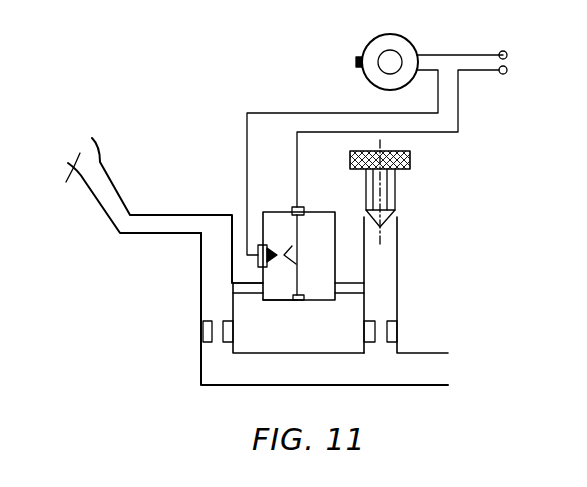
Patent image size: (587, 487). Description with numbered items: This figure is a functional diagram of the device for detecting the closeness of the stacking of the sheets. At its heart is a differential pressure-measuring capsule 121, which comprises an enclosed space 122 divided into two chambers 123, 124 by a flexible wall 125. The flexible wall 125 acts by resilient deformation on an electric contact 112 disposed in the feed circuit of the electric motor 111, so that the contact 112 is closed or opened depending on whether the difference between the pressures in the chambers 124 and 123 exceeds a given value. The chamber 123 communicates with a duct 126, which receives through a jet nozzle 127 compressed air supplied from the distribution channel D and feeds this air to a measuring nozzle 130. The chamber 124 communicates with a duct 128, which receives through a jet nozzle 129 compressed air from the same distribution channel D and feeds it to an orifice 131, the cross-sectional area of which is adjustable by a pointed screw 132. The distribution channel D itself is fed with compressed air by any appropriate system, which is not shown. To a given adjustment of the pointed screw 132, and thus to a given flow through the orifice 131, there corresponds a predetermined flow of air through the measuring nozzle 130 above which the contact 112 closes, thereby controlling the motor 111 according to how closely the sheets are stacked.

The electric motor 111 is at (377, 52).
The electric contact 112 is at (288, 251).
The differential pressure-measuring capsule 121 is at (251, 387).
The enclosed space 122 is at (303, 208).
The chamber 123 is at (276, 289).
The chamber 124 is at (319, 289).
The flexible wall 125 is at (299, 246).
The duct 126 is at (212, 283).
The jet nozzle 127 is at (213, 327).
The duct 128 is at (385, 272).
The jet nozzle 129 is at (380, 327).
The measuring nozzle 130 is at (134, 210).
The orifice 131 is at (397, 218).
The pointed screw 132 is at (388, 185).
The distribution channel D is at (367, 371).